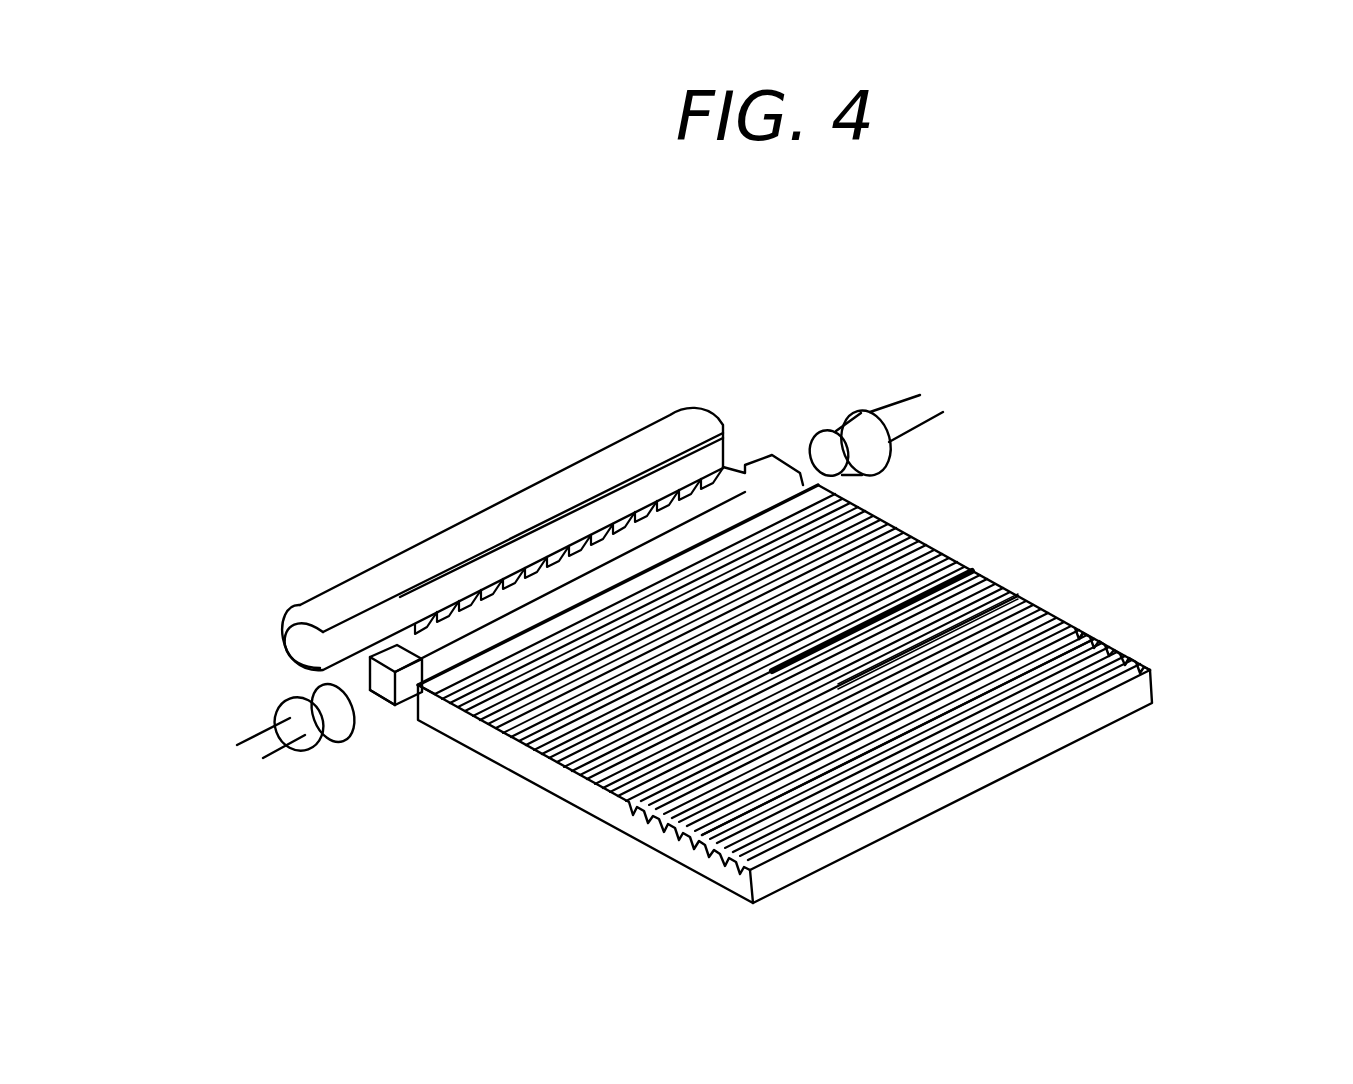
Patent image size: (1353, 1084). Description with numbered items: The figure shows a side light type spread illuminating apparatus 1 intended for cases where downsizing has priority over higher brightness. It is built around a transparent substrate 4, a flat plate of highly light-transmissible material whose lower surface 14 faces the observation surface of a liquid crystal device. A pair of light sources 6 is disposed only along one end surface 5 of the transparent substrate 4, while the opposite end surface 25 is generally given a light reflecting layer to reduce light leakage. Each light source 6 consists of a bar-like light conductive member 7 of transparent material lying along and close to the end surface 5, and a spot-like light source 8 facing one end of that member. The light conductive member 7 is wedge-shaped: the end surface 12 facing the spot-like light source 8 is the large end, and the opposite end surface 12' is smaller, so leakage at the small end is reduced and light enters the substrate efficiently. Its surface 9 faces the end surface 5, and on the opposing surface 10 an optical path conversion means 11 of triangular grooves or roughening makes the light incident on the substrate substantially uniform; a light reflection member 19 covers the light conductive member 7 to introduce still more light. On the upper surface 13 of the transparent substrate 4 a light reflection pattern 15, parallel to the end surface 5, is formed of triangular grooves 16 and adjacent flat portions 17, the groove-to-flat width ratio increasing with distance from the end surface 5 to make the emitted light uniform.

The spread illuminating apparatus 1 is at (851, 678).
The transparent substrate 4 is at (545, 775).
The end surface 5 is at (420, 717).
The light source 6 is at (590, 580).
The light conductive member 7 is at (763, 472).
The spot-like light source 8 is at (855, 418).
The surface 9 is at (510, 640).
The surface 10 is at (660, 450).
The optical path conversion means 11 is at (591, 512).
The end surface 12 is at (487, 617).
The end surface 12' is at (399, 759).
The surface 13 is at (943, 553).
The lower surface 14 is at (605, 840).
The light reflection pattern 15 is at (1131, 529).
The grooves 16 is at (1088, 647).
The flat portions 17 is at (1130, 657).
The light reflection member 19 is at (491, 494).
The end surface 25 is at (850, 835).